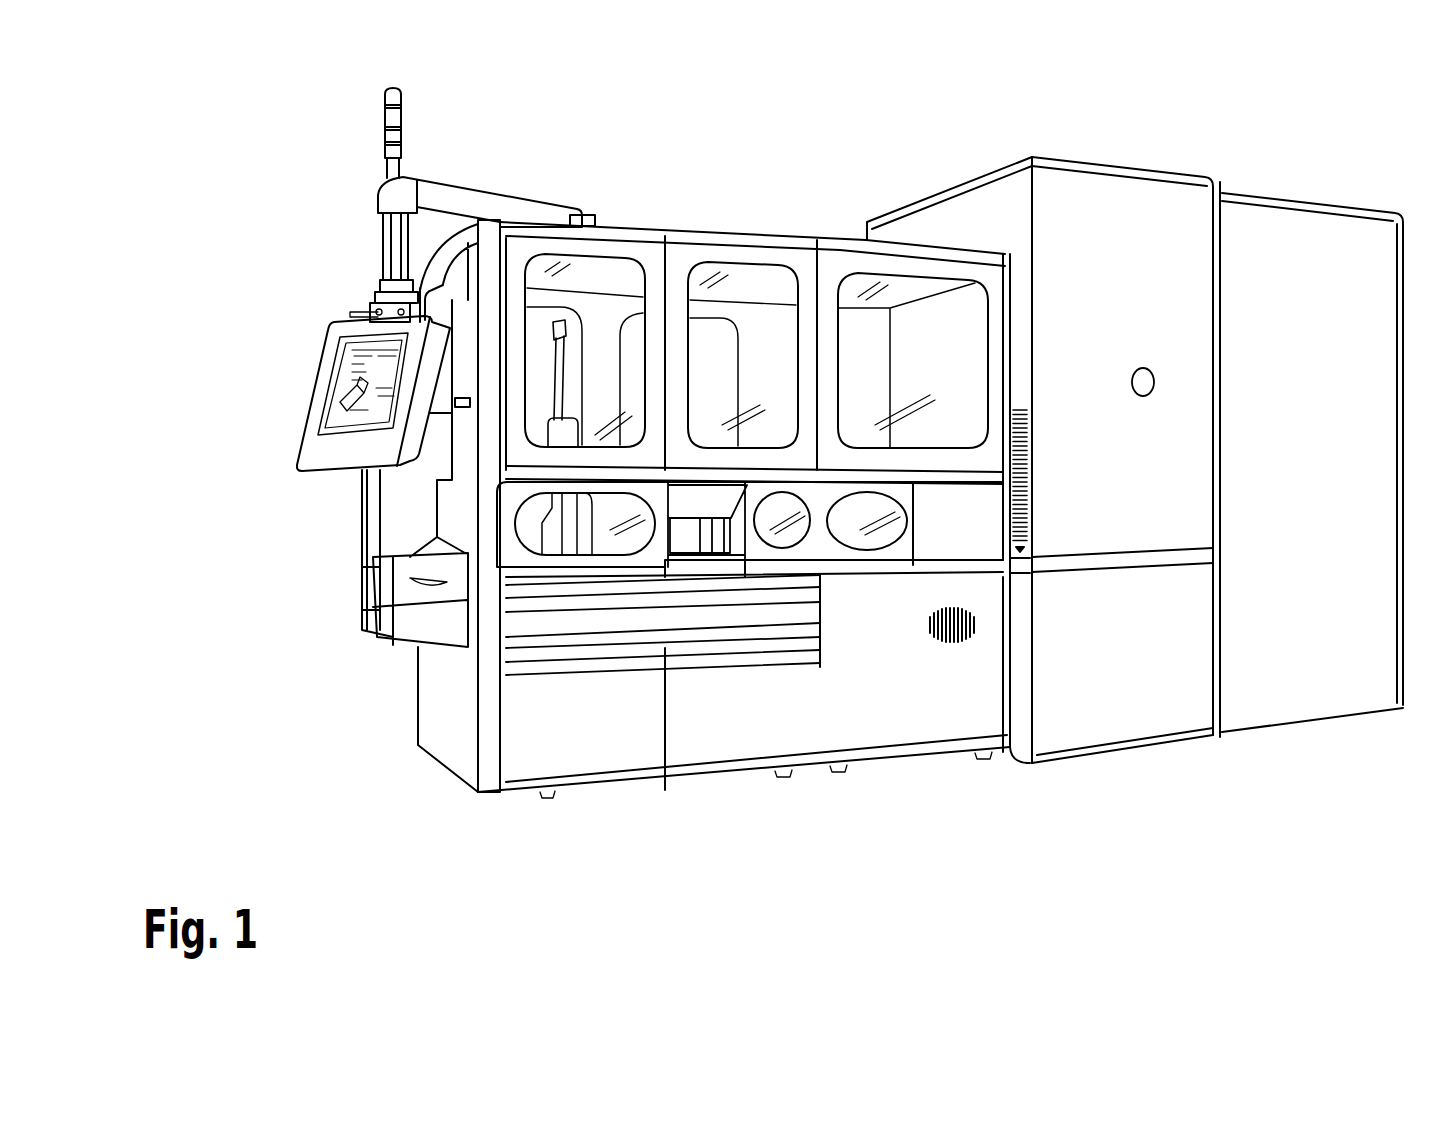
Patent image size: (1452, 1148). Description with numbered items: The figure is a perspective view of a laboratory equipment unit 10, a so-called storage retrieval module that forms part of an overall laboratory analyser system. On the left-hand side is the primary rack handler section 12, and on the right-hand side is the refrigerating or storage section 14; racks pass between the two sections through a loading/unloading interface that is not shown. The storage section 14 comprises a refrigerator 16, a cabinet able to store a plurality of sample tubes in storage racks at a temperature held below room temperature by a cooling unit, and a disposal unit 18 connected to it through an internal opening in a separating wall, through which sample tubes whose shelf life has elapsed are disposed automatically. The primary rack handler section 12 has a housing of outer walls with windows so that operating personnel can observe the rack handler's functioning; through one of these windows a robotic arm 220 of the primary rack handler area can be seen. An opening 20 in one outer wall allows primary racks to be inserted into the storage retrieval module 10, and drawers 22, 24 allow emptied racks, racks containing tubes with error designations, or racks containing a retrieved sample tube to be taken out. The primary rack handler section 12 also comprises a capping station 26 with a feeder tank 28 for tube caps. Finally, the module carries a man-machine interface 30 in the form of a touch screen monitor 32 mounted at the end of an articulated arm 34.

The laboratory equipment unit 10 is at (1022, 826).
The primary rack handler section 12 is at (1007, 780).
The storage section 14 is at (1403, 732).
The refrigerator 16 is at (1253, 218).
The disposal unit 18 is at (1182, 662).
The opening 20 is at (700, 498).
The drawer 22 is at (812, 587).
The drawer 24 is at (812, 630).
The capping station 26 is at (345, 505).
The feeder tank 28 is at (398, 522).
The man-machine interface 30 is at (337, 182).
The touch screen monitor 32 is at (335, 353).
The articulated arm 34 is at (497, 212).
The robotic arm 220 is at (560, 370).